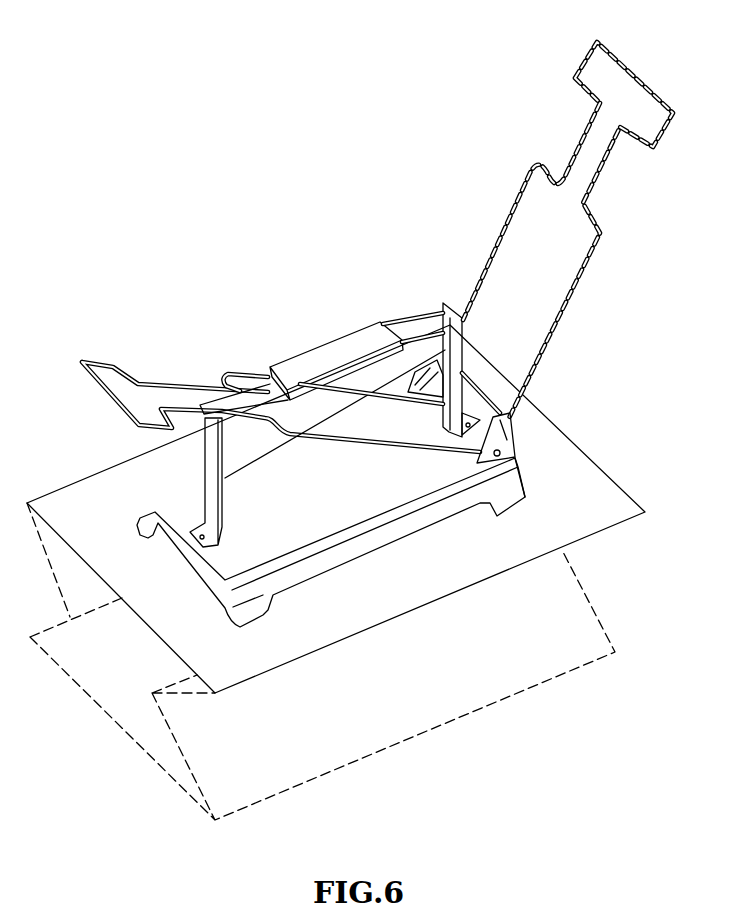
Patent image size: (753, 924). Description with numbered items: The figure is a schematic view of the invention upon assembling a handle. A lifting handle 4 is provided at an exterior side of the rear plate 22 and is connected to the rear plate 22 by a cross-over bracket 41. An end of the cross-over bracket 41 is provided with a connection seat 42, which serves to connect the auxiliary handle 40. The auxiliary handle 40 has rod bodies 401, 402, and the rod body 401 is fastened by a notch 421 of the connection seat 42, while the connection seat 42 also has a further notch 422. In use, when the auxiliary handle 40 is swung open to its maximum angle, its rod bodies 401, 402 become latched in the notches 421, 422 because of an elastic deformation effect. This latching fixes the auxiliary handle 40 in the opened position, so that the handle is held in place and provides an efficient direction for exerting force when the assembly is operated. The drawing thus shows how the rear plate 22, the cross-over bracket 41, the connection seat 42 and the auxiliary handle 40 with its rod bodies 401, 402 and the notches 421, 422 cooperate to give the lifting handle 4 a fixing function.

The lifting handle 4 is at (437, 317).
The rear plate 22 is at (592, 503).
The auxiliary handle 40 is at (150, 383).
The cross-over bracket 41 is at (180, 515).
The connection seat 42 is at (510, 423).
The rod body 401 is at (577, 277).
The rod body 402 is at (240, 377).
The notch 421 is at (505, 425).
The notch 422 is at (423, 358).